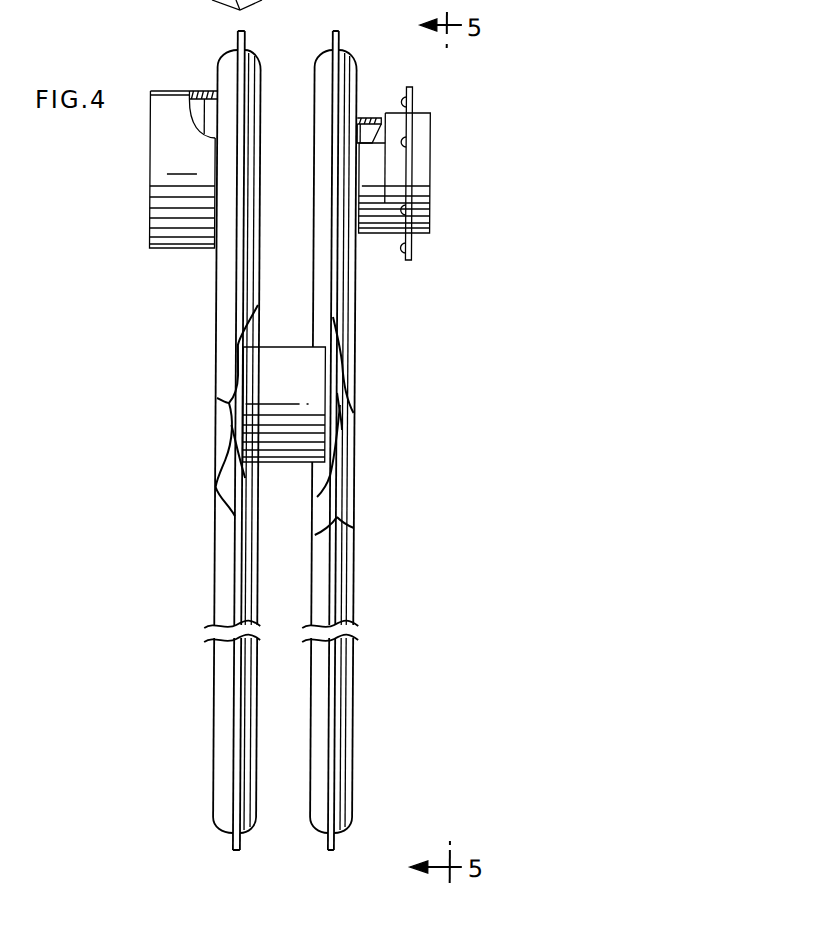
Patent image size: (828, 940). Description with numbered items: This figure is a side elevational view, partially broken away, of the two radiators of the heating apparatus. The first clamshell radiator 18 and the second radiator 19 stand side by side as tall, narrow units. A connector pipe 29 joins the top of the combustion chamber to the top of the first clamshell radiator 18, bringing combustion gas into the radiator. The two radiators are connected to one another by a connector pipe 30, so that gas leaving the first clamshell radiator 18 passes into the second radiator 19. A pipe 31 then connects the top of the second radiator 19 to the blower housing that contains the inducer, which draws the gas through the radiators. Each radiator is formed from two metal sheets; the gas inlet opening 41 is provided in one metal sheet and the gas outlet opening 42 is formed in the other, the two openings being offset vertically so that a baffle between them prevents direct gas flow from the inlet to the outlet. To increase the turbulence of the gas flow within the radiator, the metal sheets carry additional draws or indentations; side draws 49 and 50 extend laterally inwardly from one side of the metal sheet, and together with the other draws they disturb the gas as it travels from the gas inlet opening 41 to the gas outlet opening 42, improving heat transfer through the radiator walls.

The first clamshell radiator 18 is at (216, 546).
The second radiator 19 is at (361, 561).
The connector pipe 29 is at (177, 250).
The connector pipe 30 is at (284, 463).
The pipe 31 is at (373, 234).
The gas inlet opening 41 is at (320, 335).
The gas outlet opening 42 is at (359, 118).
The side draw 49 is at (356, 416).
The side draw 50 is at (348, 501).